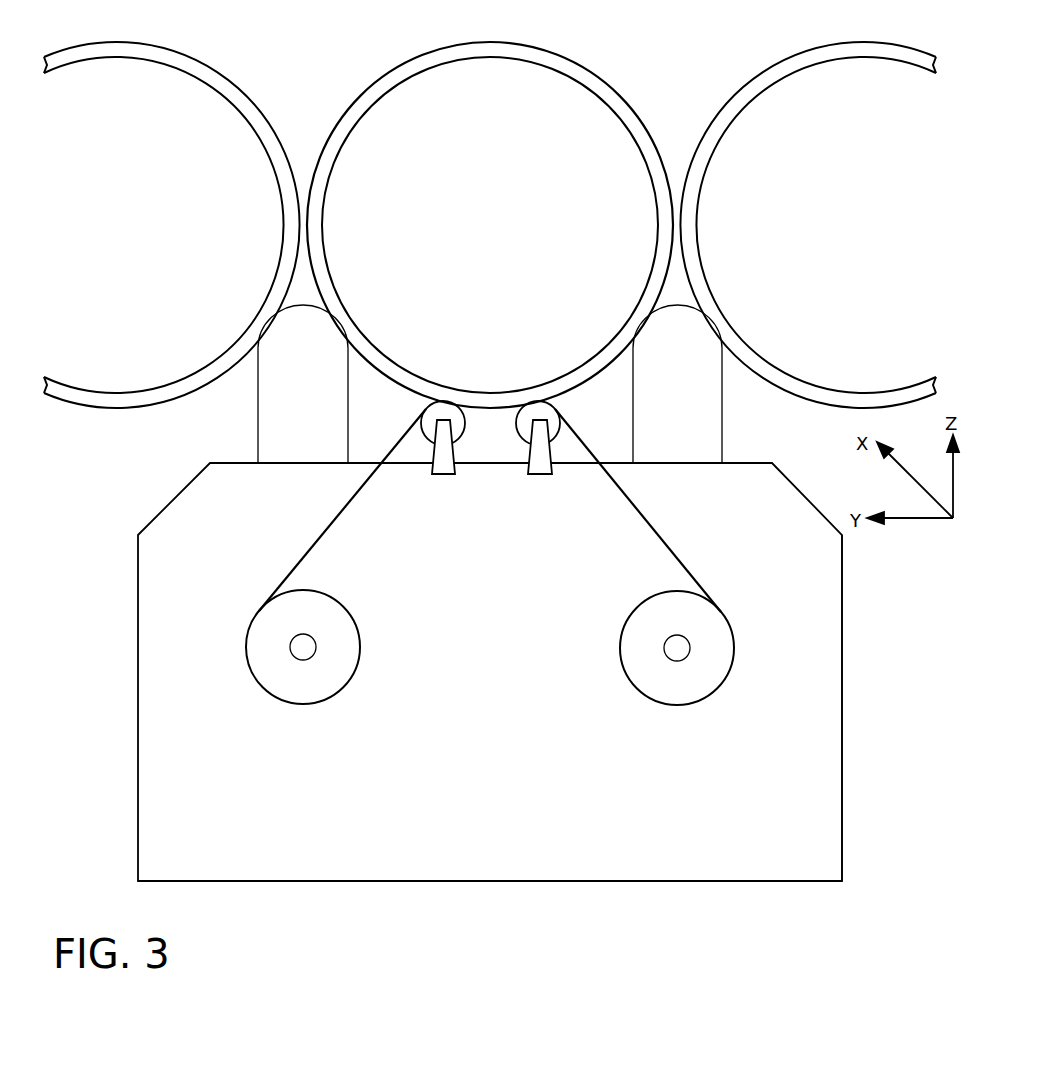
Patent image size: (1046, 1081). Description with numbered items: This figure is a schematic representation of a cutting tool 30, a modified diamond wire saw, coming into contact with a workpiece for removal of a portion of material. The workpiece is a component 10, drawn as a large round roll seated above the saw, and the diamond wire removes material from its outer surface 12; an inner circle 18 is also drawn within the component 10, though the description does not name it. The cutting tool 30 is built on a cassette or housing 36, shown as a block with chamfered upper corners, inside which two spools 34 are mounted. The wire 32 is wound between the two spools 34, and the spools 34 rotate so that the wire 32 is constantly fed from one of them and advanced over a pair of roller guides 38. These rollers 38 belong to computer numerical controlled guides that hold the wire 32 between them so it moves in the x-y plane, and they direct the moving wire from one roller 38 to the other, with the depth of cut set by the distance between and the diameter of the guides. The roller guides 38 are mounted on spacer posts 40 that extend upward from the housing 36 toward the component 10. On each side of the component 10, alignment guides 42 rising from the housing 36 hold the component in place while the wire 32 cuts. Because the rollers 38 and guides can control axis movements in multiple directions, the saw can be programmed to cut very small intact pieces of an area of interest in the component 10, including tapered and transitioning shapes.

The component 10 is at (490, 228).
The surface 12 is at (596, 376).
The core of roll 18 is at (657, 244).
The cutting tool 30 is at (481, 593).
The wire 32 is at (668, 542).
The spools 34 is at (338, 667).
The housing 36 is at (810, 593).
The rollers 38 is at (430, 430).
The spacer posts 40 is at (448, 465).
The alignment guides 42 is at (262, 412).